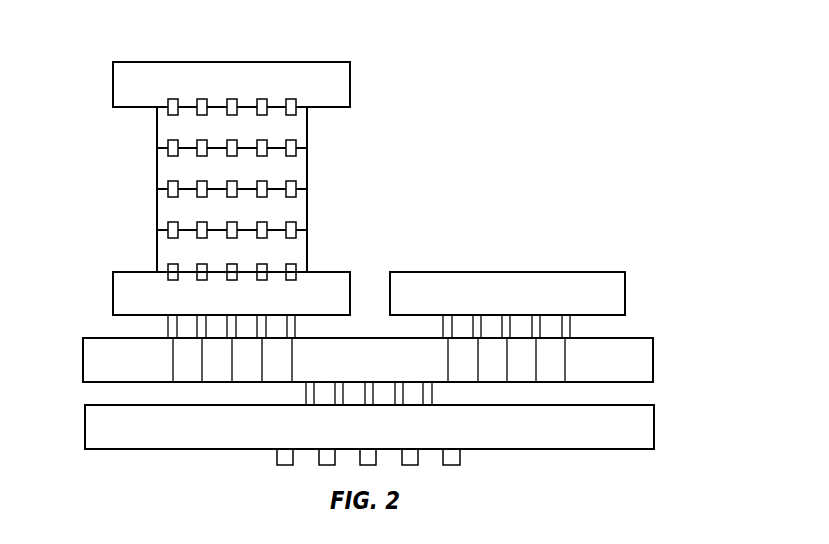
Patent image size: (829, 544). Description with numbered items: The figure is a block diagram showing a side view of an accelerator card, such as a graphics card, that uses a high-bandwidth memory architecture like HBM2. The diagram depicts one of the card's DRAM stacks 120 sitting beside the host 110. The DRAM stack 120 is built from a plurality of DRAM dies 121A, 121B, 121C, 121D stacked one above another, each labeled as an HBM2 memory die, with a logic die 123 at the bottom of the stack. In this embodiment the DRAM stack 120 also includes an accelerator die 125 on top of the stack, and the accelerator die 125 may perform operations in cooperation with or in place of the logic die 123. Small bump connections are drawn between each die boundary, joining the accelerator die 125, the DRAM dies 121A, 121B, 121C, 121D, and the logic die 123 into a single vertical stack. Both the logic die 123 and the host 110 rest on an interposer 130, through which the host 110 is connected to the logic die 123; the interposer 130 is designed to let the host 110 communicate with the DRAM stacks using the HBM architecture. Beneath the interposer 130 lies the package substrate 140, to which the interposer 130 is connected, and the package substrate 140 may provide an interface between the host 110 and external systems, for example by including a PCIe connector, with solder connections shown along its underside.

The DRAM stack 120 is at (340, 42).
The accelerator die 125 is at (113, 88).
The DRAM die 121A is at (157, 124).
The DRAM die 121B is at (157, 166).
The DRAM die 121C is at (157, 207).
The DRAM die 121D is at (157, 248).
The logic die 123 is at (113, 293).
The host 110 is at (626, 292).
The interposer 130 is at (654, 358).
The package substrate 140 is at (655, 423).